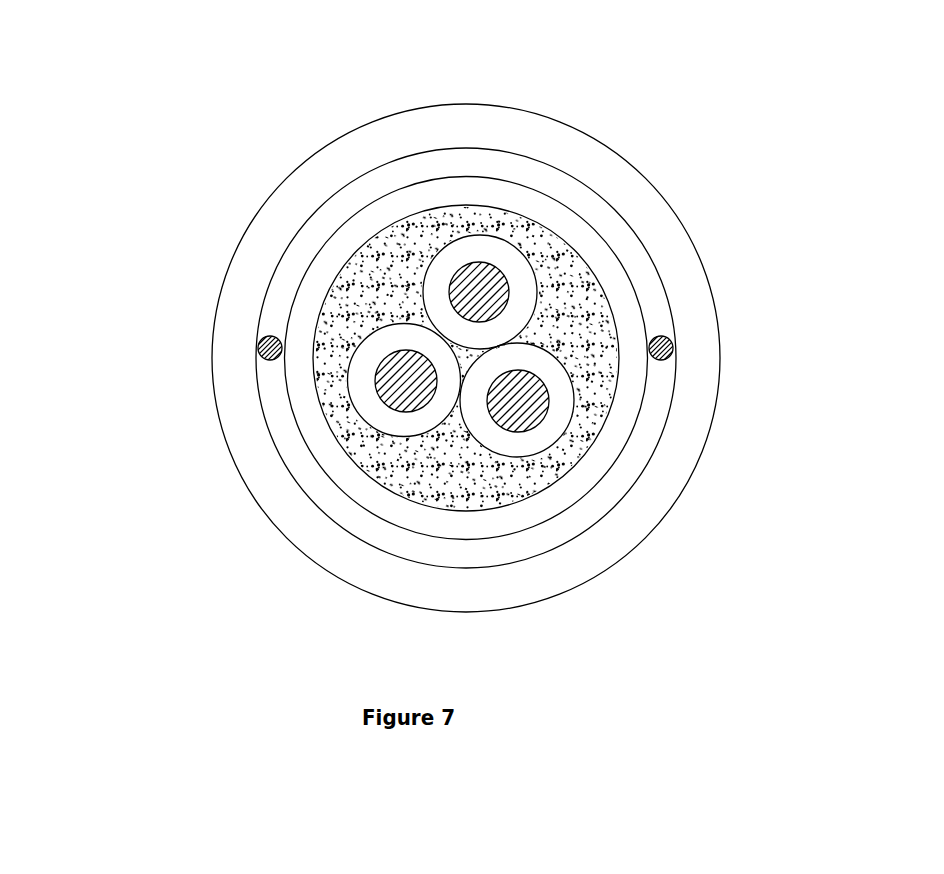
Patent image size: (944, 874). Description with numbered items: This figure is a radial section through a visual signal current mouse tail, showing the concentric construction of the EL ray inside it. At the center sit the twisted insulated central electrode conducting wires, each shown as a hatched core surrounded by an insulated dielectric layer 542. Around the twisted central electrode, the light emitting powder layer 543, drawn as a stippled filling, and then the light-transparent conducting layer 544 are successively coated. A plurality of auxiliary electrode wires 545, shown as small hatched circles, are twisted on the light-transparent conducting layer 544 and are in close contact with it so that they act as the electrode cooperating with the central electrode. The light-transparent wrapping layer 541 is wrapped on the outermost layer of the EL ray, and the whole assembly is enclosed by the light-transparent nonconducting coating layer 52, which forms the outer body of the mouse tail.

The light-transparent nonconducting coating layer 52 is at (232, 353).
The light-transparent wrapping layer 541 is at (503, 283).
The insulated dielectric layer 542 is at (483, 250).
The light emitting powder layer 543 is at (352, 292).
The light-transparent conducting layer 544 is at (418, 198).
The auxiliary electrode wire 545 is at (667, 343).